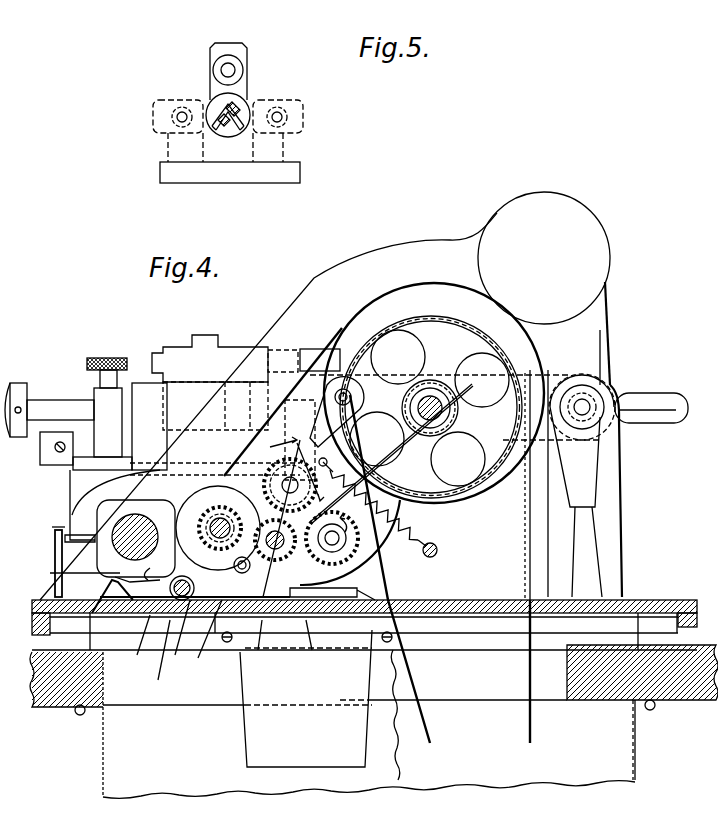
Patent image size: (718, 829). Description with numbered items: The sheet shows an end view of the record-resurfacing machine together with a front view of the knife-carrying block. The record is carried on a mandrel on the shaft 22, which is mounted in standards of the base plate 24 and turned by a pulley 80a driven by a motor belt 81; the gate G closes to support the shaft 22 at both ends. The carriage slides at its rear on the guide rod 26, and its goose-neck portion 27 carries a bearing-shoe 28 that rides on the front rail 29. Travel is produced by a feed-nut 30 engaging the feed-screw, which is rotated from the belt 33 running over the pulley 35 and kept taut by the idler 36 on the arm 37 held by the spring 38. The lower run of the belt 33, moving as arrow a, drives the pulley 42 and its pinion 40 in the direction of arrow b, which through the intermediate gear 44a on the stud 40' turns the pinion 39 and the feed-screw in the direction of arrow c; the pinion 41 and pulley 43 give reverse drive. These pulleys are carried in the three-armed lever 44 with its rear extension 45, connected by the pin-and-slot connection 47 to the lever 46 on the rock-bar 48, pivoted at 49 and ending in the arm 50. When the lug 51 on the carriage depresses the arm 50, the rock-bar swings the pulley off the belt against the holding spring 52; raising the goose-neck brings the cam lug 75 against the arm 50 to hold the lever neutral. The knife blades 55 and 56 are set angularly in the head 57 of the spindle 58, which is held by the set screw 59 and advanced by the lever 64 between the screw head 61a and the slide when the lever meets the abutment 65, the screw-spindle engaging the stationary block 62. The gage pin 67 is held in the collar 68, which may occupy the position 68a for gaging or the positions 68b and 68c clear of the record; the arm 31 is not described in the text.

In FIG. 4, the shaft 22 is at (432, 393).
In FIG. 4, the base plate 24 is at (455, 600).
In FIG. 4, the guide rod 26 is at (110, 537).
In FIG. 4, the goose-neck portion 27 is at (343, 265).
In FIG. 4, the bearing-shoe 28 is at (598, 472).
In FIG. 4, the front rail 29 is at (605, 545).
In FIG. 4, the feed-nut 30 is at (197, 503).
In FIG. 4, the arm 31 is at (107, 500).
In FIG. 4, the belt 33 is at (398, 462).
In FIG. 4, the pulley 35 is at (213, 480).
In FIG. 4, the idler 36 is at (366, 380).
In FIG. 4, the arm 37 is at (323, 412).
In FIG. 4, the spring 38 is at (420, 530).
In FIG. 4, the pinion 39 is at (193, 573).
In FIG. 4, the pinion 40 is at (412, 555).
In FIG. 4, the stud 40' is at (312, 647).
In FIG. 4, the pinion 41 is at (320, 458).
In FIG. 4, the pulley 42 is at (375, 573).
In FIG. 4, the pulley 43 is at (283, 434).
In FIG. 4, the three-armed lever 44 is at (348, 640).
In FIG. 4, the intermediate gear 44a is at (265, 646).
In FIG. 4, the rear extension 45 is at (365, 665).
In FIG. 4, the lever 46 is at (178, 636).
In FIG. 4, the pin-and-slot connection 47 is at (205, 640).
In FIG. 4, the rock-bar 48 is at (140, 646).
In FIG. 4, the pivot 49 is at (157, 660).
In FIG. 4, the arm 50 is at (140, 600).
In FIG. 4, the lug 51 is at (73, 573).
In FIG. 4, the holding spring 52 is at (260, 575).
In FIG. 5, the knife blade 55 is at (237, 128).
In FIG. 5, the knife blade 56 is at (223, 136).
In FIG. 5, the head 57 is at (235, 103).
In FIG. 4, the spindle 58 is at (55, 408).
In FIG. 4, the set screw 59 is at (117, 356).
In FIG. 4, the screw head 61a is at (45, 455).
In FIG. 5, the stationary block 62 is at (300, 172).
In FIG. 4, the stationary block 62 is at (144, 388).
In FIG. 4, the lever 64 is at (70, 490).
In FIG. 4, the abutment 65 is at (55, 548).
In FIG. 5, the gage pin 67 is at (238, 72).
In FIG. 4, the gage pin 67 is at (318, 356).
In FIG. 4, the collar 68 is at (243, 347).
In FIG. 5, the collar position 68a is at (153, 118).
In FIG. 5, the collar position 68b is at (231, 37).
In FIG. 5, the collar position 68c is at (312, 110).
In FIG. 4, the cam lug 75 is at (100, 560).
In FIG. 4, the pulley 80a is at (500, 330).
In FIG. 4, the belt 81 is at (525, 530).
In FIG. 4, the gate G is at (559, 369).
In FIG. 4, the arrow a is at (295, 518).
In FIG. 4, the arrow b is at (350, 542).
In FIG. 4, the arrow c is at (143, 571).